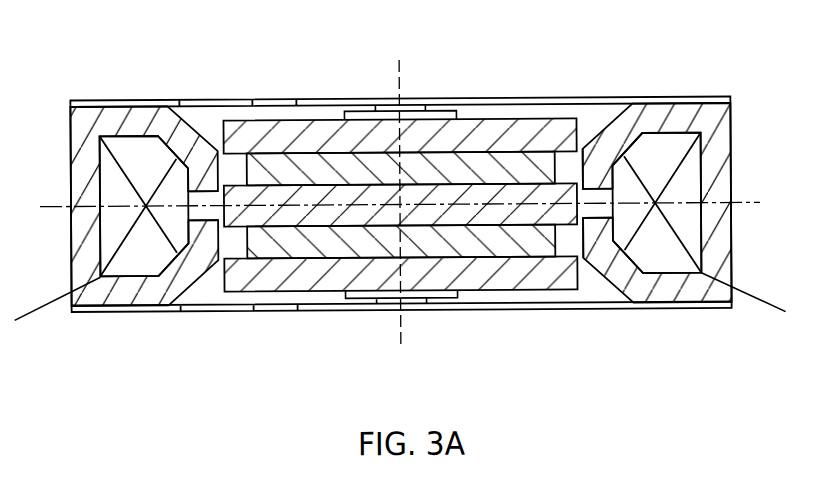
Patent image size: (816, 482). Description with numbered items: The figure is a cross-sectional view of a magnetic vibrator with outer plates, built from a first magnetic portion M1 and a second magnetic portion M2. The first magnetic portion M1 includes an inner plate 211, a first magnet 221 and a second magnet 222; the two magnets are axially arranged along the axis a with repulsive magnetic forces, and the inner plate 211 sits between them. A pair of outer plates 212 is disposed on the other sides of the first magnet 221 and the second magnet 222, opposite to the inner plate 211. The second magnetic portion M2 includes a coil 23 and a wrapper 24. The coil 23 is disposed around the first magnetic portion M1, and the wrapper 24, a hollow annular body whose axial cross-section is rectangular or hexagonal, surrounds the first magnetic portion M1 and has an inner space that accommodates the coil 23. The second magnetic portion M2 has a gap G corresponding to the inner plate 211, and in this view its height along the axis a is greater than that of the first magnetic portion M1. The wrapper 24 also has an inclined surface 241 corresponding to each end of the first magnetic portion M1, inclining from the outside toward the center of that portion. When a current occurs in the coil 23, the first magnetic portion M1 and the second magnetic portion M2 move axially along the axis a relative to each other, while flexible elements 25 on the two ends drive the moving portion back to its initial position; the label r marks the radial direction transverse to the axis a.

The inner plate 211 is at (263, 195).
The outer plates 212 is at (342, 140).
The first magnet 221 is at (525, 168).
The second magnet 222 is at (268, 245).
The coil 23 is at (655, 142).
The wrapper 24 is at (671, 288).
The inclined surface 241 is at (603, 135).
The flexible elements 25 is at (420, 313).
The gap G is at (204, 183).
The first magnetic portion M1 is at (435, 76).
The second magnetic portion M2 is at (641, 335).
The axis a is at (399, 191).
The radial direction r is at (408, 202).